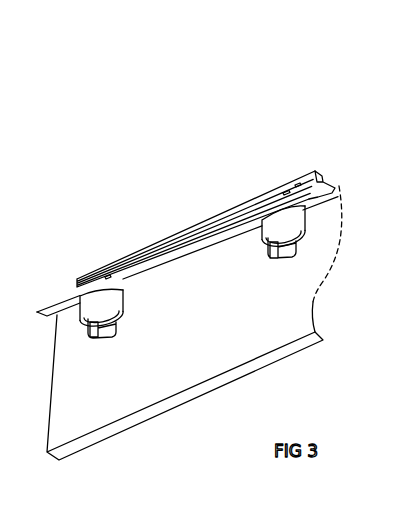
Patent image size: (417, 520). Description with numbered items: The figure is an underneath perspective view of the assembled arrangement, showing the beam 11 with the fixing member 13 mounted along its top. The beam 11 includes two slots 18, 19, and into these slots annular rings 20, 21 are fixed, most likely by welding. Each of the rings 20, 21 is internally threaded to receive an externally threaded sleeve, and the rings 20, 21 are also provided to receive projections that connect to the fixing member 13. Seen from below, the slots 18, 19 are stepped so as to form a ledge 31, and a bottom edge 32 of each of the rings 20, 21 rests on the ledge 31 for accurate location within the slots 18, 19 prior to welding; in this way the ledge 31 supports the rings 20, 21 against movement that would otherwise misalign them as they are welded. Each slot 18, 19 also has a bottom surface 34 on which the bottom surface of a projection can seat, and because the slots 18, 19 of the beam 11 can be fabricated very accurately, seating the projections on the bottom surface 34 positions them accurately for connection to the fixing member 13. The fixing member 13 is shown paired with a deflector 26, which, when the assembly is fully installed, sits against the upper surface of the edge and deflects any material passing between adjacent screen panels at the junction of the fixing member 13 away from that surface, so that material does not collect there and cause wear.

The beam 11 is at (206, 330).
The fixing member 13 is at (182, 229).
The slot 18 is at (105, 337).
The slot 19 is at (283, 254).
The annular ring 20 is at (83, 308).
The annular ring 21 is at (275, 220).
The deflector 26 is at (337, 189).
The ledge 31 is at (123, 313).
The bottom edge 32 is at (83, 328).
The bottom surface 34 is at (105, 320).